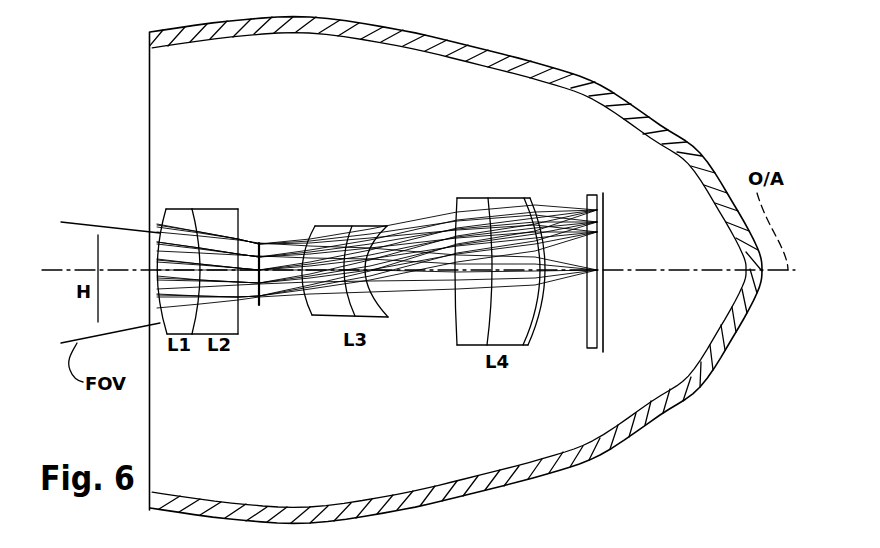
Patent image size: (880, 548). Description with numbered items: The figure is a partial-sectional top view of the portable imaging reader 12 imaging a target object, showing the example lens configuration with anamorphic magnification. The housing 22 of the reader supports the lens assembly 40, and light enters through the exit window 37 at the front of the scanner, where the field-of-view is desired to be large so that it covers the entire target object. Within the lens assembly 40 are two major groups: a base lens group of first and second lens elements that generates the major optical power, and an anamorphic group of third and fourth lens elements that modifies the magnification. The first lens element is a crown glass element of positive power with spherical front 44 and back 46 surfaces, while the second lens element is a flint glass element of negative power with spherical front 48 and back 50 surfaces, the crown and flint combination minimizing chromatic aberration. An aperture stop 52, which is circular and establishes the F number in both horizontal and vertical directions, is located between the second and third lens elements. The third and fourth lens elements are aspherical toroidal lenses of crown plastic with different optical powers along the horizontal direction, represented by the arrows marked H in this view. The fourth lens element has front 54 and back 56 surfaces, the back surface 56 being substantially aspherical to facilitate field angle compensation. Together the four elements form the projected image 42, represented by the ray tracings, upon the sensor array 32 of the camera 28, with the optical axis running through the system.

The portable imaging reader 12 is at (454, 270).
The housing 22 is at (550, 63).
The camera 28 is at (605, 307).
The sensor array 32 is at (586, 203).
The exit window 37 is at (148, 90).
The lens assembly 40 is at (437, 243).
The projected image 42 is at (428, 265).
The front surface 44 is at (158, 250).
The back surface 46 is at (199, 228).
The front surface 48 is at (151, 248).
The back surface 50 is at (199, 262).
The aperture stop 52 is at (262, 243).
The front surface 54 is at (458, 212).
The back surface 56 is at (539, 319).